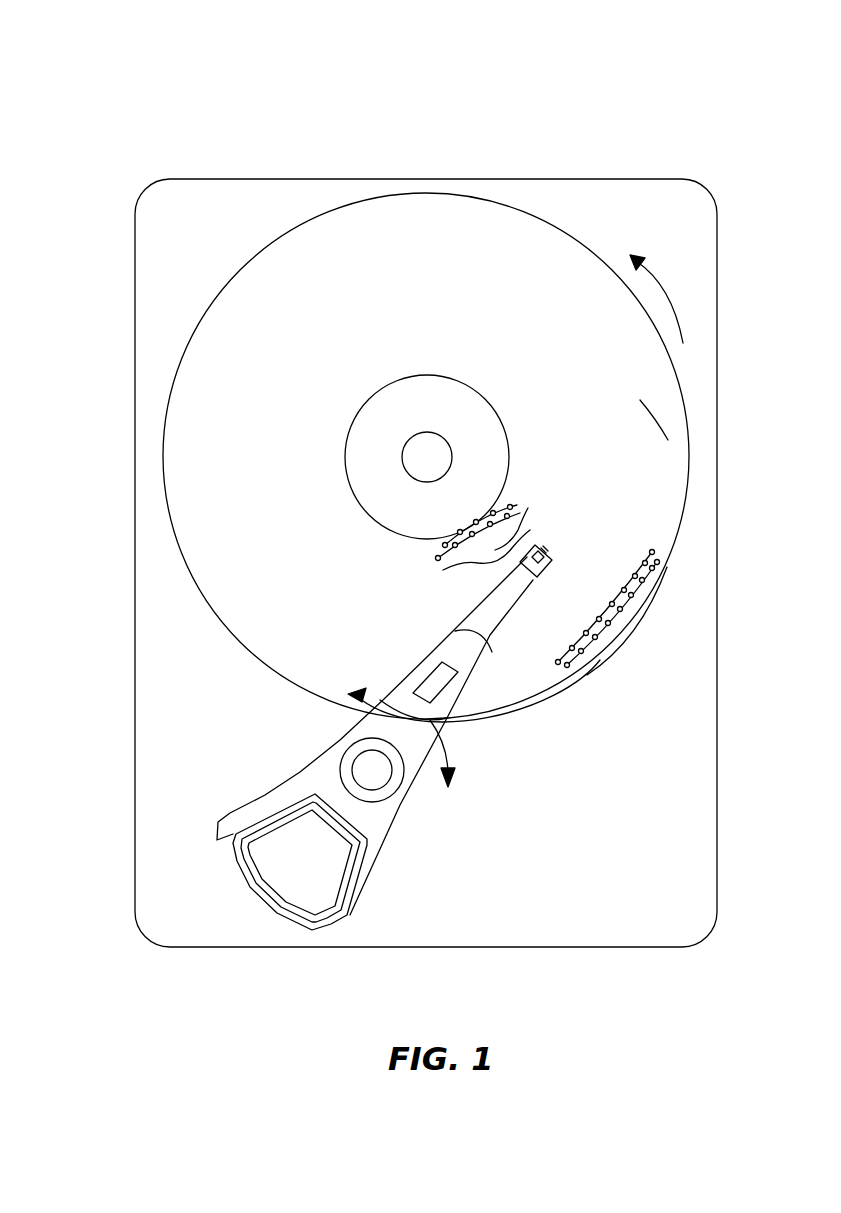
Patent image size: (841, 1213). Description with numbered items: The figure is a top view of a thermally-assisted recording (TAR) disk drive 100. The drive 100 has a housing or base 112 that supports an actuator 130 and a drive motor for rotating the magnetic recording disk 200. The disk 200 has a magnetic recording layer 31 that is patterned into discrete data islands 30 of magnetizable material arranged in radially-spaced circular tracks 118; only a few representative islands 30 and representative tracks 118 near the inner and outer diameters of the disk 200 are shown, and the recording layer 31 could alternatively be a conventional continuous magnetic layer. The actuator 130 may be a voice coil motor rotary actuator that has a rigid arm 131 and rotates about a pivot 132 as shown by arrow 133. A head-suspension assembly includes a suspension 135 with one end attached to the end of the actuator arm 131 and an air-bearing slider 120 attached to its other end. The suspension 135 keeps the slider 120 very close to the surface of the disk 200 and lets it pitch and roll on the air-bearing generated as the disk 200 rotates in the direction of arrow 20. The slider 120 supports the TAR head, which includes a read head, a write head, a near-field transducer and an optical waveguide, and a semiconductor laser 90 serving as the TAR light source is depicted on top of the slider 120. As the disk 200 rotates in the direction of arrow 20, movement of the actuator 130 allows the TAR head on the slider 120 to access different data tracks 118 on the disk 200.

The thermally-assisted recording disk drive 100 is at (138, 104).
The housing or base 112 is at (645, 179).
The disk 200 is at (286, 232).
The arrow 20 is at (655, 290).
The magnetic recording layer 31 is at (668, 425).
The circular tracks 118 is at (433, 543).
The data islands 30 is at (560, 591).
The semiconductor laser 90 is at (550, 560).
The air-bearing slider 120 is at (545, 566).
The suspension 135 is at (470, 628).
The rigid arm 131 is at (412, 677).
The pivot 132 is at (365, 767).
The actuator 130 is at (218, 822).
The arrow 133 is at (450, 752).